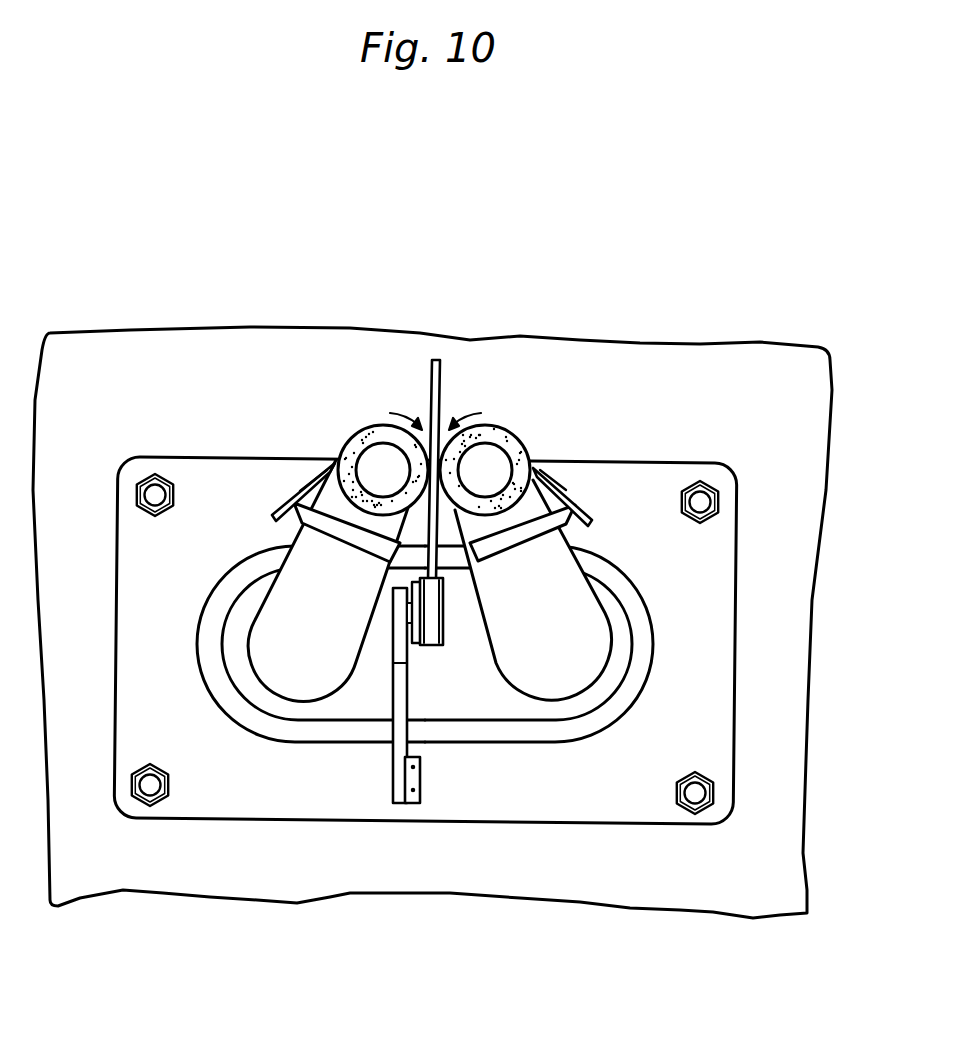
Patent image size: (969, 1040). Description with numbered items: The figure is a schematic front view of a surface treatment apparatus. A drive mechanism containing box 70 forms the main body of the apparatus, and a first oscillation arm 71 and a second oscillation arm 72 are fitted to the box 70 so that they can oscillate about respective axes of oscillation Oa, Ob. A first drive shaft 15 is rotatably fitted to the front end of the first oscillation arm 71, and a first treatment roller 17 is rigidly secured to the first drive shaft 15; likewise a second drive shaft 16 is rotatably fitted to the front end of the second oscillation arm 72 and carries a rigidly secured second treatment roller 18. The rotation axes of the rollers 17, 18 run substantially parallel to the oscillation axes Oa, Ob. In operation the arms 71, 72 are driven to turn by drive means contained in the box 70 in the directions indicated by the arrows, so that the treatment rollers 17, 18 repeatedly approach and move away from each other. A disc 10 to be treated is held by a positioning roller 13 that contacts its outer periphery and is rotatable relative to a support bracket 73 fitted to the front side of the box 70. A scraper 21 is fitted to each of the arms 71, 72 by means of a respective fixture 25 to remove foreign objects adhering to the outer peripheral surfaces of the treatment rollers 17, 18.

The disc 10 is at (438, 371).
The positioning roller 13 is at (425, 627).
The first drive shaft 15 is at (372, 466).
The second drive shaft 16 is at (496, 468).
The first treatment roller 17 is at (373, 432).
The second treatment roller 18 is at (494, 433).
The scraper 21 is at (300, 491).
The fixture 25 is at (292, 512).
The drive mechanism containing box 70 is at (789, 657).
The first oscillation arm 71 is at (282, 592).
The second oscillation arm 72 is at (560, 572).
The support bracket 73 is at (420, 779).
The axis of oscillation Oa is at (305, 646).
The axis of oscillation Ob is at (551, 645).